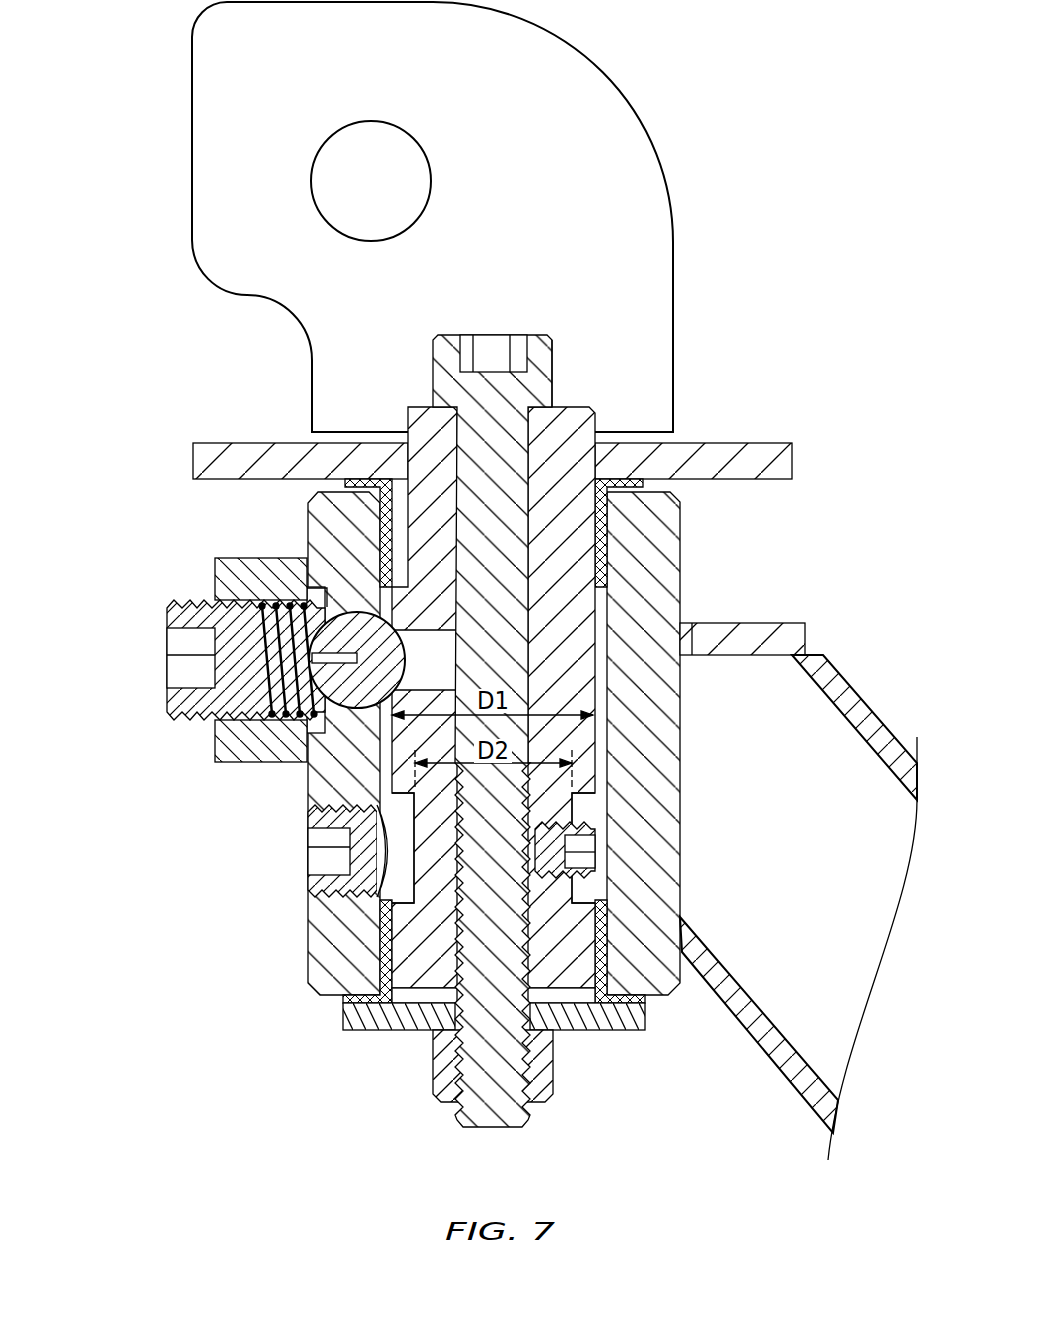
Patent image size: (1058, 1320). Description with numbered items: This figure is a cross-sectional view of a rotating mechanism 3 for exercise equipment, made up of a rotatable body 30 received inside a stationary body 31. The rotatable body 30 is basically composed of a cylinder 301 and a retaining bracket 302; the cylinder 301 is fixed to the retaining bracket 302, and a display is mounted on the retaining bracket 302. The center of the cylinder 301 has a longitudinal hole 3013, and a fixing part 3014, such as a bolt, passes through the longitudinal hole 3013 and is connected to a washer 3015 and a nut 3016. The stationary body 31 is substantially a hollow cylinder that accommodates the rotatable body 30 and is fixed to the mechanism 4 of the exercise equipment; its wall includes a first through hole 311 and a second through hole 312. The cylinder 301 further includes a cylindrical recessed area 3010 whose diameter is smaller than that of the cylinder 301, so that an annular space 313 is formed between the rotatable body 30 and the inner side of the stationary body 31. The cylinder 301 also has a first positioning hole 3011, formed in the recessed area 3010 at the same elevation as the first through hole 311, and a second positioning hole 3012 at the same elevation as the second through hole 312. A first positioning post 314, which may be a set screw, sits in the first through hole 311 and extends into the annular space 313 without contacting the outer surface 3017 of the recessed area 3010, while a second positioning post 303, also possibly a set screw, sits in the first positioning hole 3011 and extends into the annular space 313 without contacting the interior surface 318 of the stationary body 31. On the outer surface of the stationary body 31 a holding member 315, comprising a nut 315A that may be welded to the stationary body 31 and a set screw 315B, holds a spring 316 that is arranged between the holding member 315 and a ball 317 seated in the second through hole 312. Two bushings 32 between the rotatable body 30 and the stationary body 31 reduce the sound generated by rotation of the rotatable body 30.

The retaining bracket 302 is at (643, 172).
The fixing part 3014 is at (545, 330).
The longitudinal hole 3013 is at (552, 395).
The second positioning hole 3012 is at (433, 645).
The rotatable body 30 is at (598, 463).
The rotating mechanism 3 is at (528, 742).
The bushings 32 is at (643, 485).
The second through hole 312 is at (362, 612).
The stationary body 31 is at (529, 743).
The first through hole 311 is at (350, 907).
The ball 317 is at (327, 590).
The holding member 315 is at (171, 659).
The nut 315A is at (228, 573).
The set screw 315B is at (178, 616).
The spring 316 is at (262, 718).
The cylinder 301 is at (594, 694).
The mechanism 4 is at (895, 730).
The annular space 313 is at (395, 815).
The first positioning post 314 is at (315, 808).
The interior surface 318 is at (600, 832).
The second positioning post 303 is at (600, 870).
The first positioning hole 3011 is at (585, 910).
The outer surface 3017 is at (378, 883).
The washer 3015 is at (355, 1020).
The cylindrical recessed area 3010 is at (432, 893).
The nut 3016 is at (550, 1083).